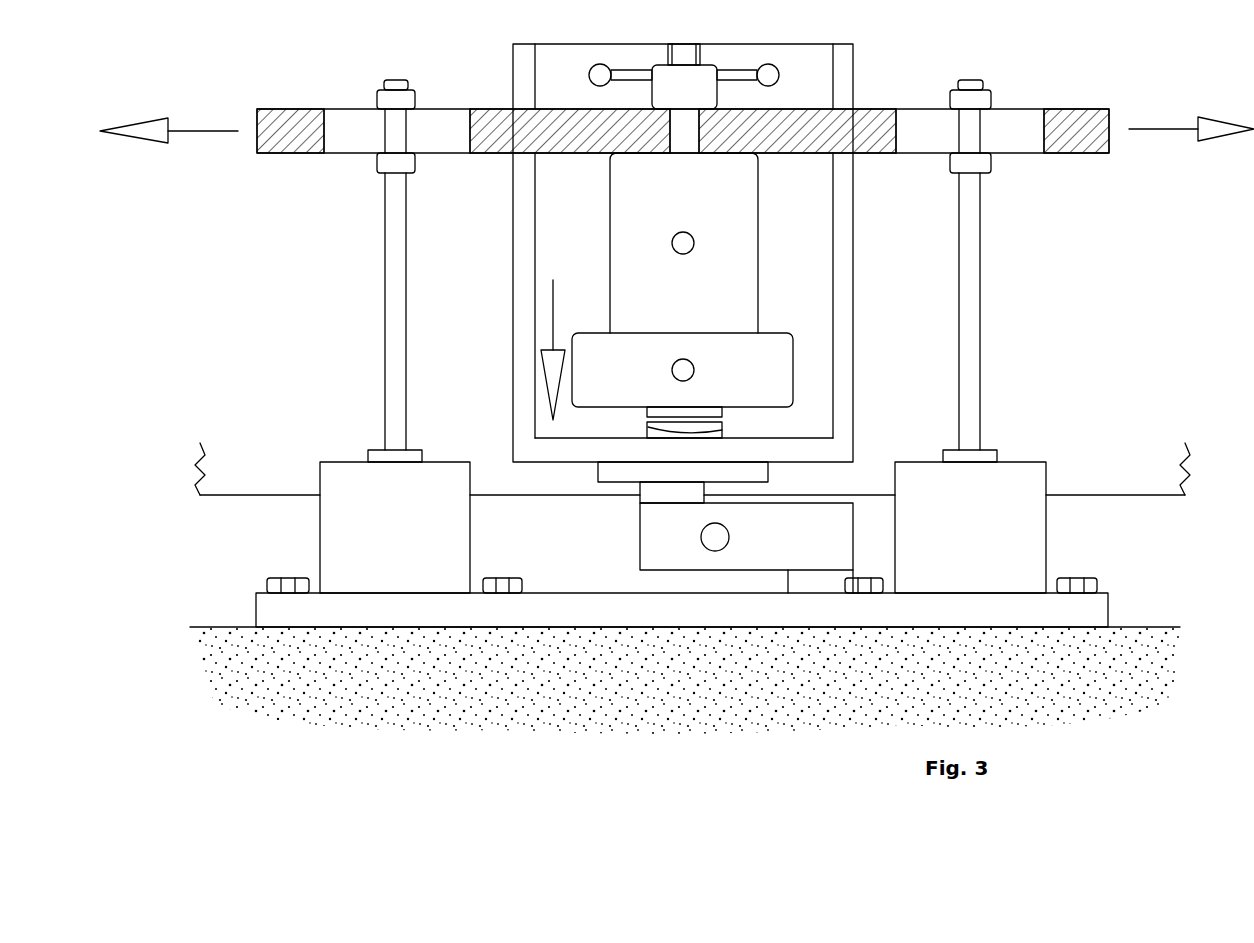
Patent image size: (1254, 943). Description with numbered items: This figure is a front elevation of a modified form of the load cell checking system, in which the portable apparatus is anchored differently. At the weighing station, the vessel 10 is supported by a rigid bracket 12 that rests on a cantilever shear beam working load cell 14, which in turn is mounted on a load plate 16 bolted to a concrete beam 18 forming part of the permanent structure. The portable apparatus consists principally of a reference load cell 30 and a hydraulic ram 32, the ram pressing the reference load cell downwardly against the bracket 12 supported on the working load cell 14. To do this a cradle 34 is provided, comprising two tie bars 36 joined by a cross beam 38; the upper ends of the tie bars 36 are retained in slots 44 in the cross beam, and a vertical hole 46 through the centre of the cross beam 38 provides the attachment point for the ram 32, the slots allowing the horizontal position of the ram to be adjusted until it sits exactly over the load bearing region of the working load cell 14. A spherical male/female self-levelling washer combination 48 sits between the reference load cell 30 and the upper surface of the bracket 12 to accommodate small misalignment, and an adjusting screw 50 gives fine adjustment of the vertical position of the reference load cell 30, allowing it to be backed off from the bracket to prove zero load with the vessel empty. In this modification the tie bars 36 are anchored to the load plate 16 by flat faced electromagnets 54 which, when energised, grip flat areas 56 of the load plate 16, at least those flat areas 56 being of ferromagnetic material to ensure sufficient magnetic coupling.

The vessel 10 is at (245, 480).
The rigid bracket 12 is at (843, 405).
The cantilever shear beam working load cell 14 is at (668, 560).
The load plate 16 is at (323, 618).
The concrete beam 18 is at (1135, 640).
The reference load cell 30 is at (768, 350).
The hydraulic ram 32 is at (745, 240).
The cradle 34 is at (305, 60).
The tie bars 36 is at (397, 395).
The cross beam 38 is at (874, 112).
The slots 44 is at (440, 112).
The vertical hole 46 is at (672, 134).
The spherical male/female self-levelling washer combination 48 is at (722, 430).
The adjusting screw 50 is at (705, 75).
The flat faced electromagnets 54 is at (438, 542).
The flat areas 56 is at (413, 593).